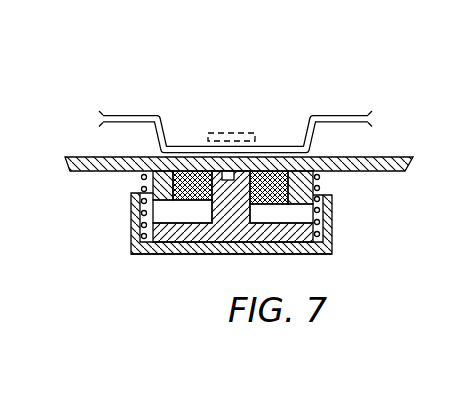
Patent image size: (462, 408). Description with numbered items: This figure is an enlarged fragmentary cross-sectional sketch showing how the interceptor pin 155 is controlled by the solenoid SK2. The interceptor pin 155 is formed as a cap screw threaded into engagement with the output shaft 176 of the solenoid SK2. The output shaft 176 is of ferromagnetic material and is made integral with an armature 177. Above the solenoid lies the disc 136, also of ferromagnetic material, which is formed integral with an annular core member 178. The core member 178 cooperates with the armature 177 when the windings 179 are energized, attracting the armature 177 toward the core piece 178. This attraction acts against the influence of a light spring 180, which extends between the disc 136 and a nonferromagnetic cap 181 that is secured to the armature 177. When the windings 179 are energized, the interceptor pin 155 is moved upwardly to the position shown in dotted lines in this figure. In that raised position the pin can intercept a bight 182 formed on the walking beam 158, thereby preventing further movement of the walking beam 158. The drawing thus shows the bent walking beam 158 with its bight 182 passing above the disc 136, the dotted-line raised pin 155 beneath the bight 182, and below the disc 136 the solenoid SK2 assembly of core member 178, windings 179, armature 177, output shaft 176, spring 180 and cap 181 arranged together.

The disc 136 is at (375, 157).
The interceptor pin 155 is at (221, 163).
The walking beam 158 is at (135, 110).
The bight 182 is at (283, 143).
The output shaft 176 is at (252, 217).
The armature 177 is at (190, 214).
The annular core member 178 is at (151, 182).
The windings 179 is at (204, 205).
The light spring 180 is at (320, 186).
The nonferromagnetic cap 181 is at (333, 236).
The solenoid SK2 is at (137, 252).